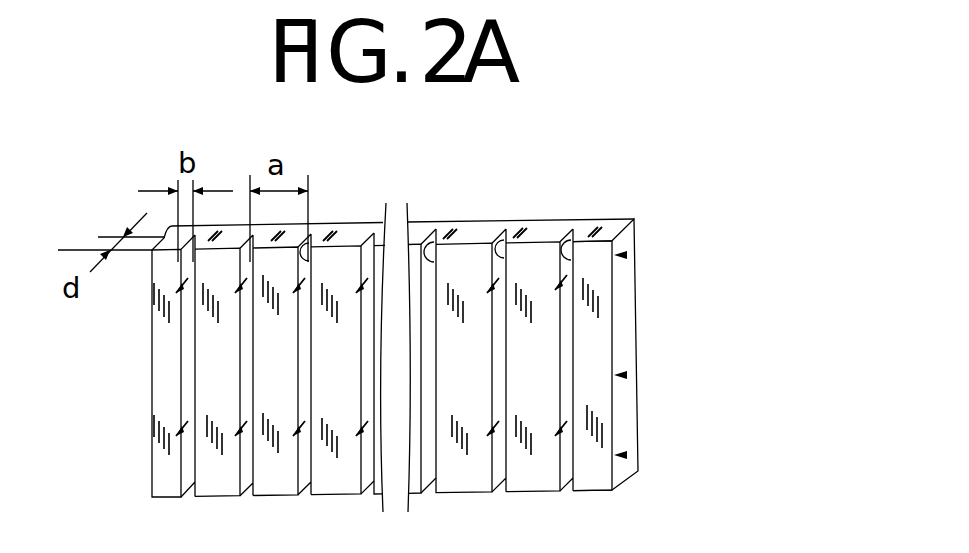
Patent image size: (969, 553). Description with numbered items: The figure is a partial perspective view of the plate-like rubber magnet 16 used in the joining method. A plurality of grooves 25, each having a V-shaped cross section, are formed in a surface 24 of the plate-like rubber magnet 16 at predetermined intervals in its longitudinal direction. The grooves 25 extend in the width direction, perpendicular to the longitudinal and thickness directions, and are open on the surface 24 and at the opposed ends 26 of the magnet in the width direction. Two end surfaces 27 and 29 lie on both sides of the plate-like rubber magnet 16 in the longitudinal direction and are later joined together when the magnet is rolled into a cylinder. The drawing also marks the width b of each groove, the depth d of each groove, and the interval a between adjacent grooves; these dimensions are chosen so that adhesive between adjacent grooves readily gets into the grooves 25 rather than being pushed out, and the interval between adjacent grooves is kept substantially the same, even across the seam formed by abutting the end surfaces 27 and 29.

The plate-like rubber magnet 16 is at (630, 213).
The surface 24 is at (608, 442).
The grooves 25 is at (310, 263).
The opposed ends 26 is at (593, 226).
The end surface 27 is at (627, 358).
The end surface 29 is at (152, 468).